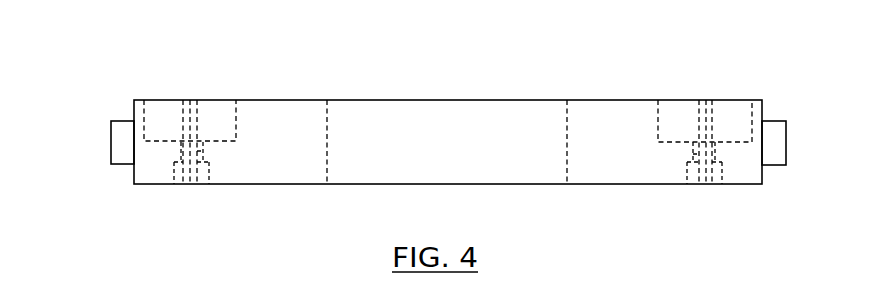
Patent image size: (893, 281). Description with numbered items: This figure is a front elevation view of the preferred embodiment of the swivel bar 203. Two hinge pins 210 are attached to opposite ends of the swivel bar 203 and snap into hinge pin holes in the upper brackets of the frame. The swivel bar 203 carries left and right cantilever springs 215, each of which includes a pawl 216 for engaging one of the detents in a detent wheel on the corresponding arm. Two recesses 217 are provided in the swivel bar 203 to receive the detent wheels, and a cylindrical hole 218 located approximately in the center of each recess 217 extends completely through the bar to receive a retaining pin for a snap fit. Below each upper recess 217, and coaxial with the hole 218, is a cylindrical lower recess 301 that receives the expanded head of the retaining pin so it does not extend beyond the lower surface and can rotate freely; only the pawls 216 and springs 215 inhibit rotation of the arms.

The swivel bar 203 is at (421, 161).
The hinge pin 210 is at (123, 137).
The cantilever spring 215 is at (603, 120).
The pawl 216 is at (193, 110).
The recess 217 is at (171, 112).
The cylindrical hole 218 is at (199, 151).
The cylindrical recess 301 is at (182, 184).